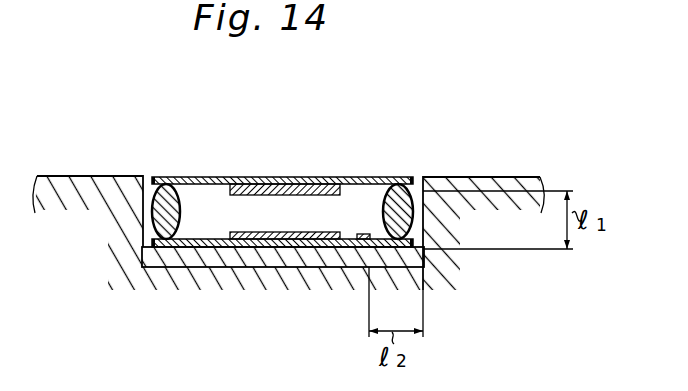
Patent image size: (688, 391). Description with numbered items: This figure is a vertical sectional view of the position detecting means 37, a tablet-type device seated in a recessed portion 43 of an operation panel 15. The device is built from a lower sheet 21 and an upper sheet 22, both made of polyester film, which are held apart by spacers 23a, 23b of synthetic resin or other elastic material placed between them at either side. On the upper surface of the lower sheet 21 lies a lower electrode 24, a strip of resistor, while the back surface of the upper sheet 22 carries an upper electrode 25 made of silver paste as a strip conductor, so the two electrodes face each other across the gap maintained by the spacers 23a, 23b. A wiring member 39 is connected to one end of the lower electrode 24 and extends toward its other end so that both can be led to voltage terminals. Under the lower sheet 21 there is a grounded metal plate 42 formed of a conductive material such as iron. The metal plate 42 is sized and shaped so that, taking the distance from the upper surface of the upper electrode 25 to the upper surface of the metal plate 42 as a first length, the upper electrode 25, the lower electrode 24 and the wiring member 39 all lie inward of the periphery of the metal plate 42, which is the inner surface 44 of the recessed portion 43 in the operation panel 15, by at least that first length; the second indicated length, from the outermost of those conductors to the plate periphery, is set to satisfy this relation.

The operation panel 15 is at (488, 177).
The lower sheet 21 is at (314, 214).
The upper sheet 22 is at (297, 172).
The spacer 23a is at (143, 179).
The spacer 23b is at (386, 188).
The lower electrode 24 is at (206, 224).
The upper electrode 25 is at (233, 231).
The position detecting means 37 is at (419, 92).
The wiring member 39 is at (366, 240).
The metal plate 42 is at (217, 260).
The recessed portion 43 is at (353, 203).
The inner surface 44 is at (407, 177).